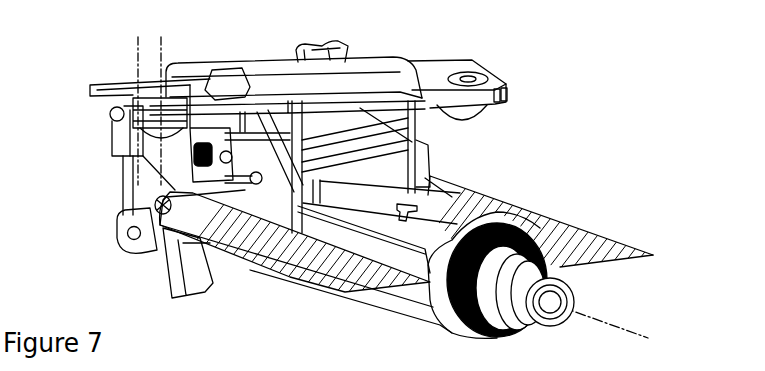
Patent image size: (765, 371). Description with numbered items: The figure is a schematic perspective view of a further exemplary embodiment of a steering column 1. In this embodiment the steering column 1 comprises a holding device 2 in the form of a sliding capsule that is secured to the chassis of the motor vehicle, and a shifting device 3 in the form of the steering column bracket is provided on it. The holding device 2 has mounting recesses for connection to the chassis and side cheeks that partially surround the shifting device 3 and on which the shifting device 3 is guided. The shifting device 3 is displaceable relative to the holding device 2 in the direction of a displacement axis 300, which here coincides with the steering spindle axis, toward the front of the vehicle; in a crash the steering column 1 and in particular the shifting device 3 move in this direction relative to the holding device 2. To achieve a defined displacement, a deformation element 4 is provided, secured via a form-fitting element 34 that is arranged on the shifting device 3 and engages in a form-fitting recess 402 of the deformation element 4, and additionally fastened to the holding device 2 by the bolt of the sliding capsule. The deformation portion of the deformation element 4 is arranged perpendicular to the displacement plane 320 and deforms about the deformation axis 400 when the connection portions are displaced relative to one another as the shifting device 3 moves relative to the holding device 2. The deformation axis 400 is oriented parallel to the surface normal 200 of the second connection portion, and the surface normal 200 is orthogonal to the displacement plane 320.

The steering column 1 is at (540, 130).
The holding device 2 is at (500, 77).
The shifting device 3 is at (268, 64).
The deformation element 4 is at (128, 145).
The form-fitting element 34 is at (109, 118).
The surface normal 200 is at (162, 50).
The displacement axis 300 is at (609, 321).
The displacement plane 320 is at (117, 223).
The deformation axis 400 is at (138, 72).
The form-fitting recess 402 is at (110, 125).